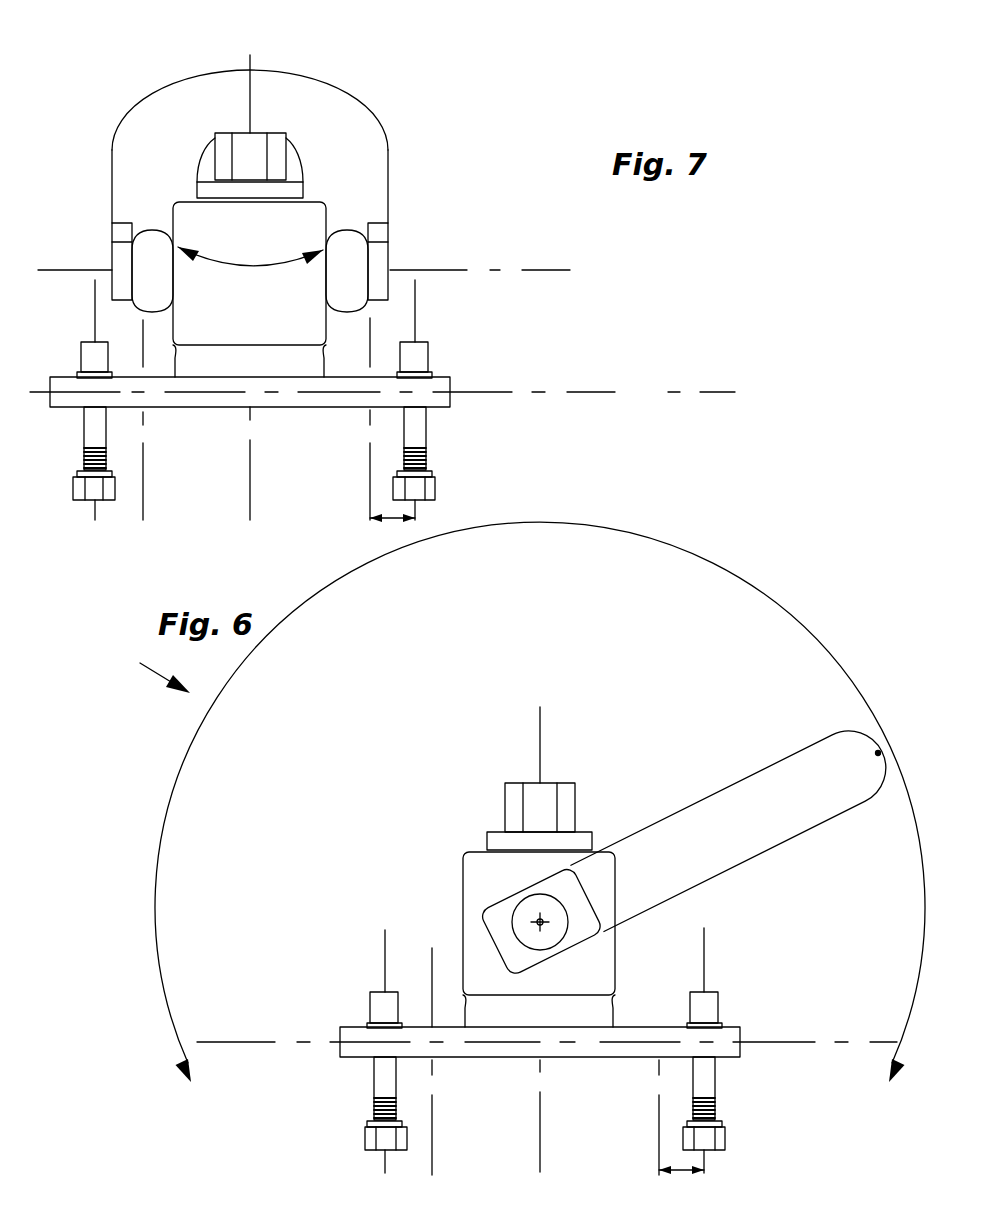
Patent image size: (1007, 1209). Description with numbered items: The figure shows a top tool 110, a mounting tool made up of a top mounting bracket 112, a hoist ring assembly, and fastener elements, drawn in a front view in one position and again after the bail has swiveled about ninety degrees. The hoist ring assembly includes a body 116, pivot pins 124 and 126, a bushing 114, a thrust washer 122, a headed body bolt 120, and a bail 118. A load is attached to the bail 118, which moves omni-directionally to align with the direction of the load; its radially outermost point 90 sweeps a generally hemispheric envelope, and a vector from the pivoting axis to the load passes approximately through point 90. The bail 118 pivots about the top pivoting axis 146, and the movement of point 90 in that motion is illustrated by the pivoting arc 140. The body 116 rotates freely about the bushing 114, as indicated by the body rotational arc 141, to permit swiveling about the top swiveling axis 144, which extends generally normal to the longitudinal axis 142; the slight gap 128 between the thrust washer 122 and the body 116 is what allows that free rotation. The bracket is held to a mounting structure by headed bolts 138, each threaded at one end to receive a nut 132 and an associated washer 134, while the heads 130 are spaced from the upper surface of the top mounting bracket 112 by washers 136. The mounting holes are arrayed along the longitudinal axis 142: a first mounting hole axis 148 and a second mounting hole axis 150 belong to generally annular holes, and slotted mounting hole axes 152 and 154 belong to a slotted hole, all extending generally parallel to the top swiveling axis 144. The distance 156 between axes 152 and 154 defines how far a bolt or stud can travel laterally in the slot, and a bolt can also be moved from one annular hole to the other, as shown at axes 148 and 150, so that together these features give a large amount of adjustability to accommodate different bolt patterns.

In FIG. 6, the radially outermost point 90 is at (878, 752).
In FIG. 6, the top tool 110 is at (140, 669).
In FIG. 7, the top mounting bracket 112 is at (450, 397).
In FIG. 6, the top mounting bracket 112 is at (340, 1030).
In FIG. 7, the bushing 114 is at (203, 358).
In FIG. 7, the body 116 is at (292, 332).
In FIG. 6, the body 116 is at (463, 888).
In FIG. 7, the bail 118 is at (377, 128).
In FIG. 6, the bail 118 is at (788, 740).
In FIG. 7, the headed body bolt 120 is at (290, 111).
In FIG. 6, the headed body bolt 120 is at (505, 800).
In FIG. 7, the thrust washer 122 is at (303, 188).
In FIG. 6, the thrust washer 122 is at (487, 843).
In FIG. 7, the pivot pin 124 is at (381, 240).
In FIG. 6, the pivot pin 124 is at (574, 872).
In FIG. 7, the pivot pin 126 is at (112, 249).
In FIG. 7, the gap 128 is at (173, 202).
In FIG. 7, the head 130 is at (82, 356).
In FIG. 6, the head 130 is at (370, 1000).
In FIG. 7, the nut 132 is at (116, 487).
In FIG. 6, the nut 132 is at (365, 1139).
In FIG. 7, the washer 134 is at (433, 474).
In FIG. 7, the washer 136 is at (432, 376).
In FIG. 7, the headed bolt 138 is at (424, 432).
In FIG. 6, the pivoting arc 140 is at (665, 555).
In FIG. 7, the body rotational arc 141 is at (250, 264).
In FIG. 7, the longitudinal axis 142 is at (615, 392).
In FIG. 6, the longitudinal axis 142 is at (888, 1042).
In FIG. 7, the top swiveling axis 144 is at (250, 462).
In FIG. 6, the top swiveling axis 144 is at (540, 1157).
In FIG. 7, the top pivoting axis 146 is at (551, 270).
In FIG. 6, the top pivoting axis 146 is at (537, 921).
In FIG. 7, the first mounting hole axis 148 is at (95, 305).
In FIG. 6, the first mounting hole axis 148 is at (385, 957).
In FIG. 7, the second mounting hole axis 150 is at (143, 460).
In FIG. 6, the second mounting hole axis 150 is at (432, 1112).
In FIG. 7, the slotted mounting hole axis 152 is at (415, 312).
In FIG. 6, the slotted mounting hole axis 152 is at (704, 960).
In FIG. 7, the slotted mounting hole axis 154 is at (370, 498).
In FIG. 6, the slotted mounting hole axis 154 is at (658, 1135).
In FIG. 7, the distance 156 is at (392, 520).